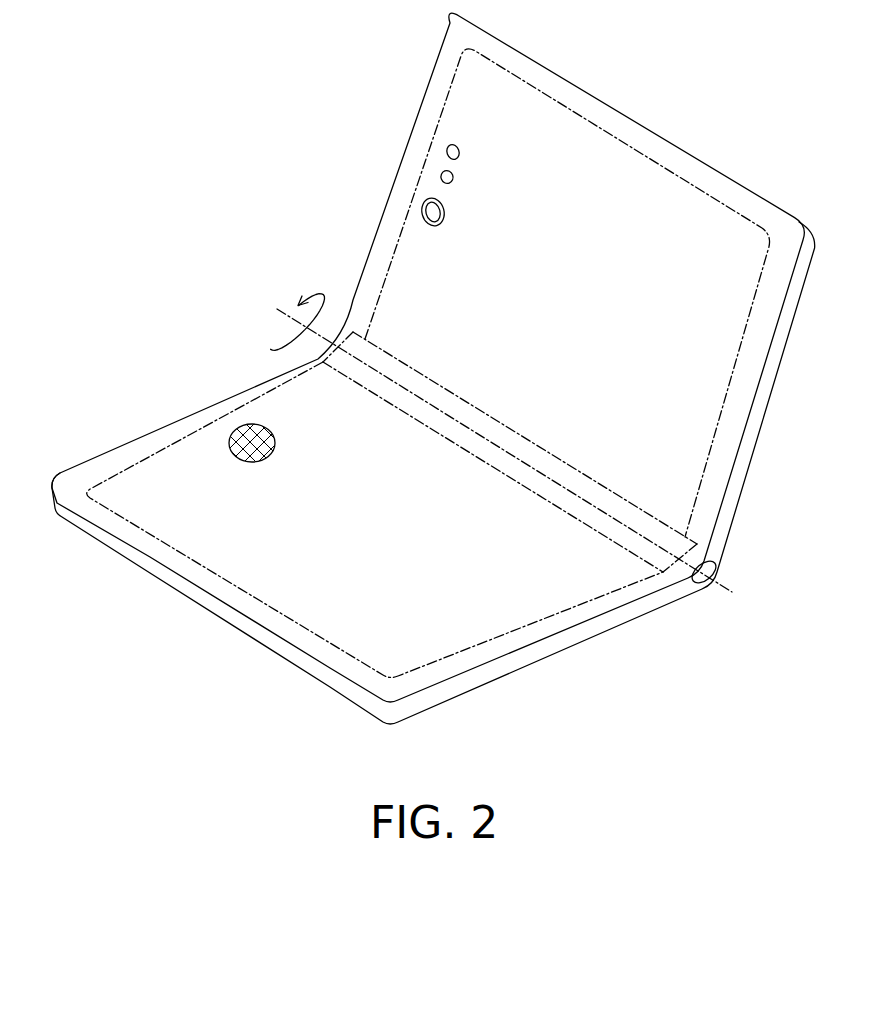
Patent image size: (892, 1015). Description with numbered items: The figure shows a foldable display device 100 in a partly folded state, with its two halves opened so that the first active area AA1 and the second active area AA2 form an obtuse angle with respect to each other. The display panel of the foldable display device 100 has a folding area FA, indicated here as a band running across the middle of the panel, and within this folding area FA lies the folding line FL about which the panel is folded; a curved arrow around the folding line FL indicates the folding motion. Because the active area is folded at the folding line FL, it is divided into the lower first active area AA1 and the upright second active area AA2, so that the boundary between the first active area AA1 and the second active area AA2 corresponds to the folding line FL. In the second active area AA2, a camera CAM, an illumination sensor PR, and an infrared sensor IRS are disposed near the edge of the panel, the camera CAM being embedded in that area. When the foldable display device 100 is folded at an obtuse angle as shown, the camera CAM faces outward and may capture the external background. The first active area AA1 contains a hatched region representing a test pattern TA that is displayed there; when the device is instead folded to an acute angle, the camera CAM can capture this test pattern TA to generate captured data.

The foldable display device 100 is at (770, 47).
The first active area AA1 is at (156, 470).
The second active area AA2 is at (527, 103).
The folding area FA is at (660, 575).
The folding line FL is at (490, 440).
The test pattern TA is at (240, 422).
The infrared sensor IRS is at (447, 148).
The illumination sensor PR is at (442, 172).
The camera CAM is at (424, 205).